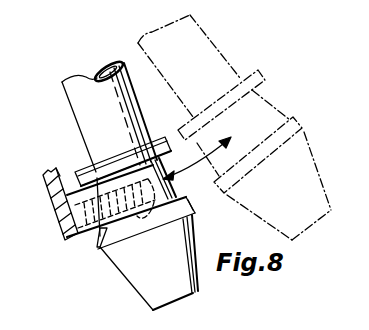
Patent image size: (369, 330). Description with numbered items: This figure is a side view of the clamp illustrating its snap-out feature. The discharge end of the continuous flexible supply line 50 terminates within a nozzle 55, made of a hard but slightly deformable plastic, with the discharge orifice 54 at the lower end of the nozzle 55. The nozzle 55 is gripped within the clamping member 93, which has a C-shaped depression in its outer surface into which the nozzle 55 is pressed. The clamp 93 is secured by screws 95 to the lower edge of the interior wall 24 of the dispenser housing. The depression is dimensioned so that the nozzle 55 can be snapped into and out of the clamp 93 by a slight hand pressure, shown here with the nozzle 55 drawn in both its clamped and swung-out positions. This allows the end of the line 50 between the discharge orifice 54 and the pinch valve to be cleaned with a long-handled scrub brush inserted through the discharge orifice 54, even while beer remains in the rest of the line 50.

The supply line 50 is at (75, 111).
The discharge orifice 54 is at (163, 304).
The clamping member 93 is at (100, 247).
The interior wall 24 is at (45, 187).
The screws 95 is at (141, 214).
The nozzle 55 is at (276, 228).